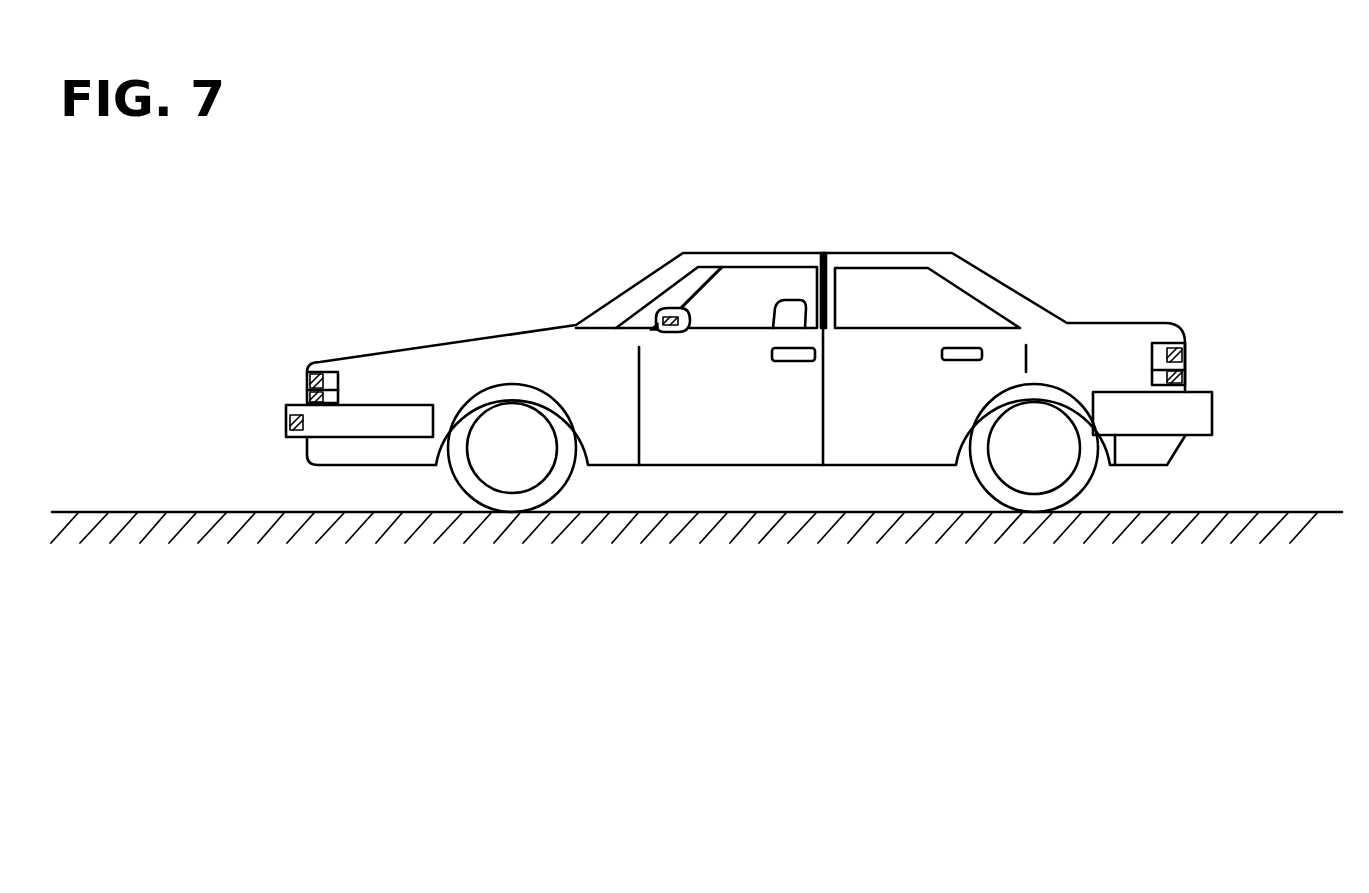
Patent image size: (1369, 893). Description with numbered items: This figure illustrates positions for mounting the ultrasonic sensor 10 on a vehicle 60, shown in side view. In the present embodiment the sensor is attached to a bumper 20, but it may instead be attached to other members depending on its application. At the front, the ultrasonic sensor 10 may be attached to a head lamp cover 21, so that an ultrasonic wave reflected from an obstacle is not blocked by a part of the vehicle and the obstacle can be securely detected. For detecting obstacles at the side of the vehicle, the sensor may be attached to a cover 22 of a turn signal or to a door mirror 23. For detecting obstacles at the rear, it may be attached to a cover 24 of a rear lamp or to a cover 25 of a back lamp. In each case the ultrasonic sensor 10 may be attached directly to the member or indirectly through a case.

The ultrasonic sensor 10 is at (307, 397).
The bumper 20 is at (388, 422).
The head lamp cover 21 is at (313, 371).
The cover of a turn signal 22 is at (330, 407).
The door mirror 23 is at (673, 309).
The cover of a rear lamp 24 is at (1167, 343).
The cover of a back lamp 25 is at (1212, 403).
The vehicle 60 is at (832, 232).